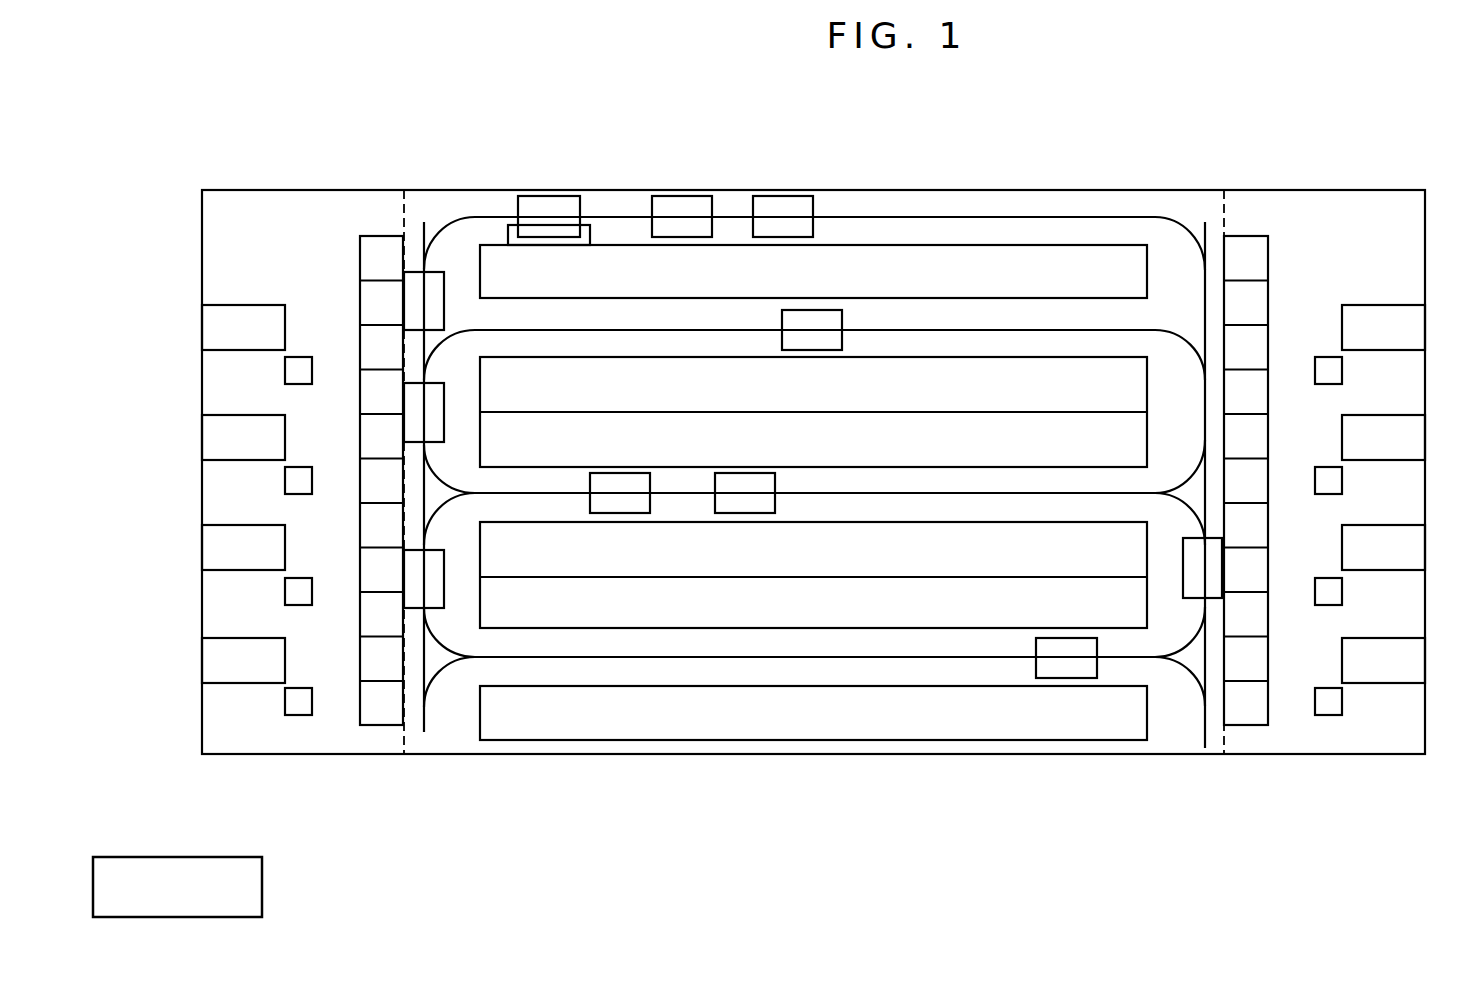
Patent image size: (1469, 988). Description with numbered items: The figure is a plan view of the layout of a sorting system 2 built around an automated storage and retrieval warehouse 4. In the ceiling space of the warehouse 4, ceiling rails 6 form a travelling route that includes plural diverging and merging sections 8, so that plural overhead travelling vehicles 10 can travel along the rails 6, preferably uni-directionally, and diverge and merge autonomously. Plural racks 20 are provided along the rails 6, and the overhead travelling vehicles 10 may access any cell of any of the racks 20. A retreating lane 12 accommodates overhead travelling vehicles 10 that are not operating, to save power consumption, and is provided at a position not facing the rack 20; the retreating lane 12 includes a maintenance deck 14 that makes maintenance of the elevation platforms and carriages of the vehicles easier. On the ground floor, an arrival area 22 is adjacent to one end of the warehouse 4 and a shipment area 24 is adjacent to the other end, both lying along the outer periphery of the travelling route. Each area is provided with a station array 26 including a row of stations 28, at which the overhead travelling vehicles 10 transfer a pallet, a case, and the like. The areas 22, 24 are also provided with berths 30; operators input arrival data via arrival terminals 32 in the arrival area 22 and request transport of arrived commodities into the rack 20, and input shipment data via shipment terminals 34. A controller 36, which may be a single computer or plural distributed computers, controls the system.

The sorting system 2 is at (824, 870).
The automated storage and retrieval warehouse 4 is at (904, 756).
The ceiling rails 6 is at (811, 439).
The diverging and merging sections 8 is at (426, 268).
The overhead travelling vehicles 10 is at (660, 205).
The retreating lane 12 is at (1085, 215).
The maintenance deck 14 is at (511, 228).
The racks 20 is at (1135, 262).
The arrival area 22 is at (303, 756).
The shipment area 24 is at (1290, 756).
The station arrays 26 is at (811, 471).
The stations 28 is at (372, 346).
The berths 30 is at (228, 338).
The arrival terminals 32 is at (300, 381).
The shipment terminals 34 is at (1325, 382).
The controller 36 is at (260, 883).